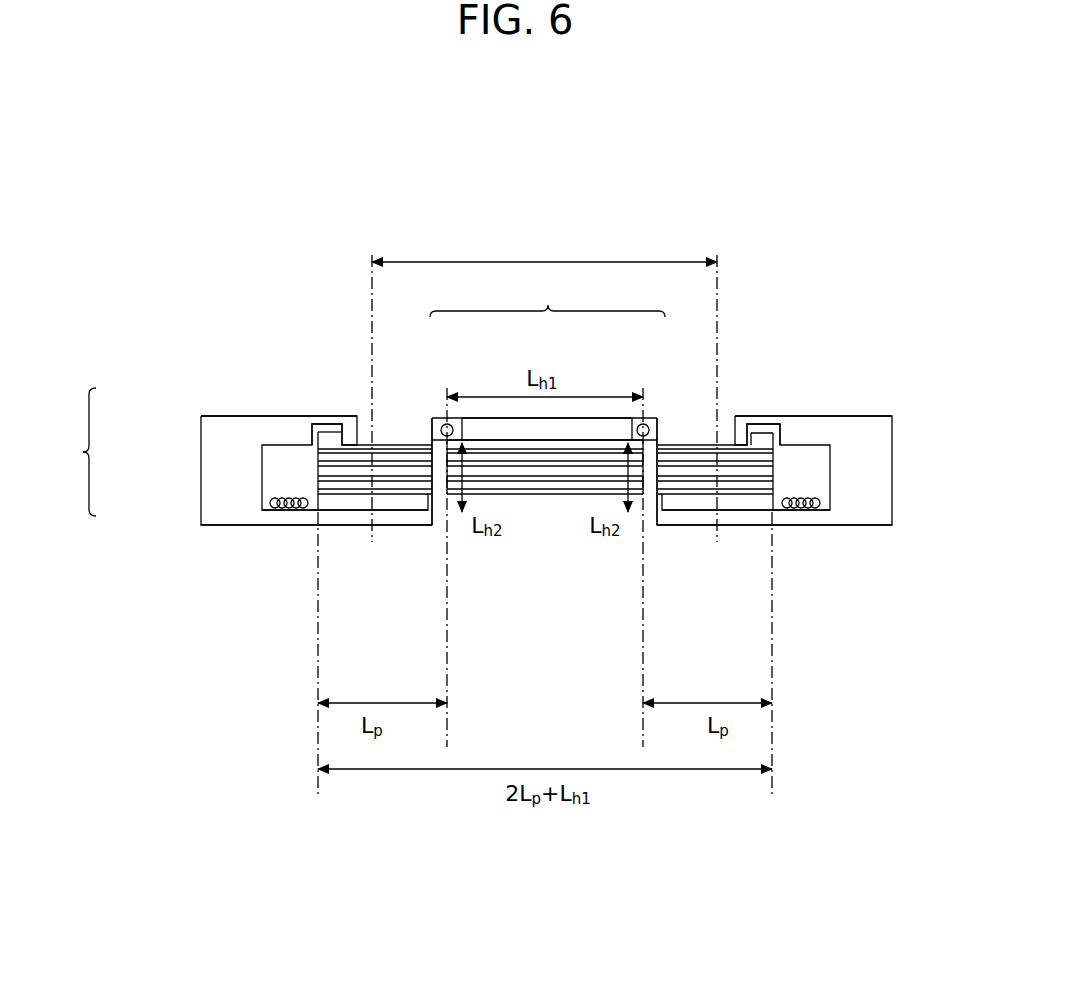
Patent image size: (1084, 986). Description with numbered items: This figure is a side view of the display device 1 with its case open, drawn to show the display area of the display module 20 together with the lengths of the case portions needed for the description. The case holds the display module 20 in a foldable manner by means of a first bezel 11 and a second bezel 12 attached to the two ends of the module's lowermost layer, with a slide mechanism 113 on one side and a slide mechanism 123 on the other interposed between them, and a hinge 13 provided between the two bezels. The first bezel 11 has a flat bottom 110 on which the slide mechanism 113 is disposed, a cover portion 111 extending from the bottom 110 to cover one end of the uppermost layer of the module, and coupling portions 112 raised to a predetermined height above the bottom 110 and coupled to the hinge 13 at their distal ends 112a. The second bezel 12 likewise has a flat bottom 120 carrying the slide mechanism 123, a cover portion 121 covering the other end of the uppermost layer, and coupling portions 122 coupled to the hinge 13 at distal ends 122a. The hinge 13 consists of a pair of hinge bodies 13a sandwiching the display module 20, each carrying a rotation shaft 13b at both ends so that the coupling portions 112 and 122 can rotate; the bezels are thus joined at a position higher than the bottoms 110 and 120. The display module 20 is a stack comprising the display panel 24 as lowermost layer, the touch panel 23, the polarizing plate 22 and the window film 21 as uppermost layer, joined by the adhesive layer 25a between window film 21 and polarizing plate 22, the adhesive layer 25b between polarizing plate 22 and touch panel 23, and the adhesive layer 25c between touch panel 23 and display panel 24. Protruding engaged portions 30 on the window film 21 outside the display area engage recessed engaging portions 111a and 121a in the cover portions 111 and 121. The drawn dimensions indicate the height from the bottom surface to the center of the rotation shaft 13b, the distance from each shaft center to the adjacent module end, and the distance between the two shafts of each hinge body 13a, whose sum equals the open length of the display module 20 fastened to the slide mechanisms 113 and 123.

The display device 1 is at (928, 316).
The first bezel 11 is at (821, 530).
The second bezel 12 is at (257, 531).
The hinge 13 is at (544, 359).
The hinge body 13a is at (575, 440).
The rotation shaft 13b is at (447, 424).
The display module 20 is at (72, 452).
The window film 21 is at (318, 449).
The polarizing plate 22 is at (318, 462).
The touch panel 23 is at (318, 474).
The display panel 24 is at (318, 487).
The adhesive layer 25a is at (318, 455).
The adhesive layer 25b is at (318, 468).
The adhesive layer 25c is at (318, 480).
The engaged portion 30 is at (336, 431).
The bottom 110 is at (786, 527).
The cover portion 111 is at (842, 416).
The engaging portion 111a is at (797, 430).
The coupling portion 112 is at (645, 527).
The distal end 112a is at (658, 430).
The slide mechanism 113 is at (764, 515).
The bottom 120 is at (289, 526).
The cover portion 121 is at (251, 415).
The engaging portion 121a is at (312, 433).
The coupling portion 122 is at (445, 527).
The distal end 122a is at (431, 430).
The slide mechanism 123 is at (328, 515).